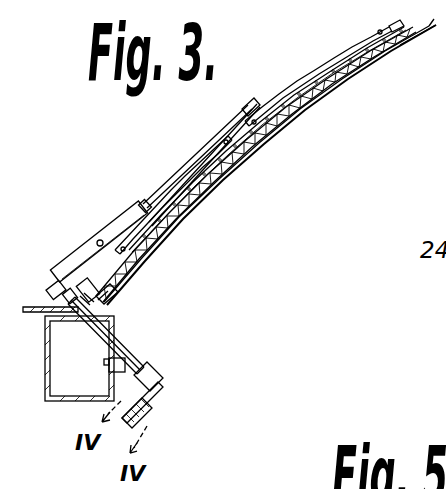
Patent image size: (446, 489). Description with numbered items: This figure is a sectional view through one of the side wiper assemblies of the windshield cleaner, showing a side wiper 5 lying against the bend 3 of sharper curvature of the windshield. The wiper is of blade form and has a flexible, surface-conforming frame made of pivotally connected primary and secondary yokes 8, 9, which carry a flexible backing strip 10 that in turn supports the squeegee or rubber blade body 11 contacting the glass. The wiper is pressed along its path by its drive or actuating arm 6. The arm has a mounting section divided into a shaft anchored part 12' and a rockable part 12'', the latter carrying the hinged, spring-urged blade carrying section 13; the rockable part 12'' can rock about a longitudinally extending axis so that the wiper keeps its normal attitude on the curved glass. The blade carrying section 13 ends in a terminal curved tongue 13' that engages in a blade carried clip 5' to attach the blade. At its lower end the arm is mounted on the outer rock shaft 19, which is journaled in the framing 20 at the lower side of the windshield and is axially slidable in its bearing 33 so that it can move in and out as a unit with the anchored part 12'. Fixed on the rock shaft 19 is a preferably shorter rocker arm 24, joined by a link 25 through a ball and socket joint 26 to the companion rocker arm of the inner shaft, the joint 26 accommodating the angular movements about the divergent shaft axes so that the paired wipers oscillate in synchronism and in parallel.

The bend of sharper curvature 3 is at (414, 33).
The side wiper 5 is at (385, 23).
The blade carried clip 5' is at (267, 139).
The drive or actuating arm 6 is at (144, 194).
The primary yoke 8 is at (218, 150).
The secondary yoke 9 is at (351, 58).
The flexible backing strip 10 is at (255, 147).
The squeegee or rubber blade body 11 is at (298, 112).
The shaft anchored part 12' is at (56, 270).
The rockable part 12'' is at (98, 241).
The blade carrying section 13 is at (169, 170).
The terminal curved tongue 13' is at (264, 89).
The outer rock shaft 19 is at (160, 382).
The framing 20 is at (47, 353).
The rocker arm 24 is at (136, 408).
The link 25 is at (144, 428).
The ball and socket joint 26 is at (84, 291).
The bearing 33 is at (100, 327).